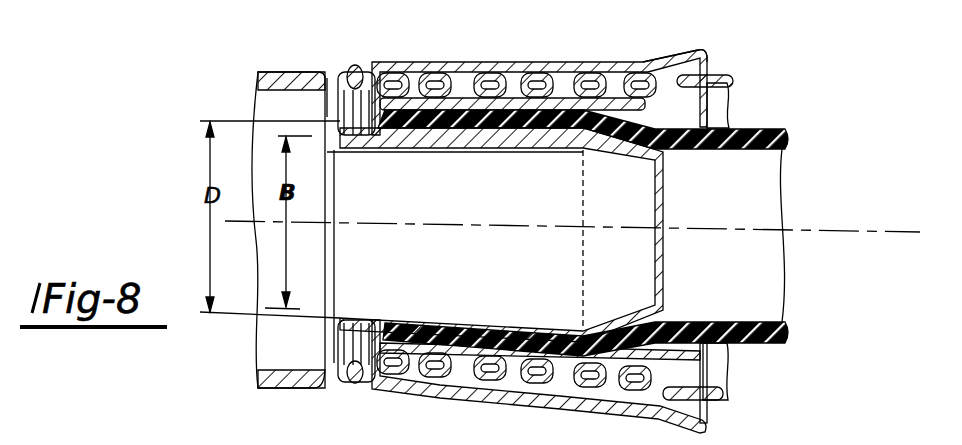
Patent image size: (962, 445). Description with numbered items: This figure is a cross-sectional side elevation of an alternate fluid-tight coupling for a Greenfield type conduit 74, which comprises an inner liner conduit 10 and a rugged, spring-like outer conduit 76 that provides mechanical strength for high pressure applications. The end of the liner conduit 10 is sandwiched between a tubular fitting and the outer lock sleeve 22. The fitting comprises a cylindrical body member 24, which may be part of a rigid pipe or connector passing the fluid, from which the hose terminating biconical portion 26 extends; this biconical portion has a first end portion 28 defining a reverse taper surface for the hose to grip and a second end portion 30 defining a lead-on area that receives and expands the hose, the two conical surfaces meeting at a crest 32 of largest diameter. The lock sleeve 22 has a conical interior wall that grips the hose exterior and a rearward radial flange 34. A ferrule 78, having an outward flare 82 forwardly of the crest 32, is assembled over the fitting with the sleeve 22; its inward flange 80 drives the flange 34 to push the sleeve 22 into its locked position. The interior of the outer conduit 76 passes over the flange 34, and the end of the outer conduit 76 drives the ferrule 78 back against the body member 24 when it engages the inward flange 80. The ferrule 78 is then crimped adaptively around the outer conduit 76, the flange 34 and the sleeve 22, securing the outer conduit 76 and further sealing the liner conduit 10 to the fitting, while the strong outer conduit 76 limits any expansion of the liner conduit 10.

The liner conduit 10 is at (766, 126).
The outer lock sleeve 22 is at (440, 136).
The cylindrical body member 24 is at (275, 72).
The hose terminating biconical portion 26 is at (488, 148).
The first end portion 28 is at (518, 148).
The second end portion 30 is at (613, 152).
The crest 32 is at (577, 148).
The radial flange 34 is at (383, 140).
The Greenfield type conduit 74 is at (742, 91).
The outer conduit 76 is at (717, 75).
The ferrule 78 is at (453, 65).
The inward flange 80 is at (323, 224).
The outward flare 82 is at (680, 53).